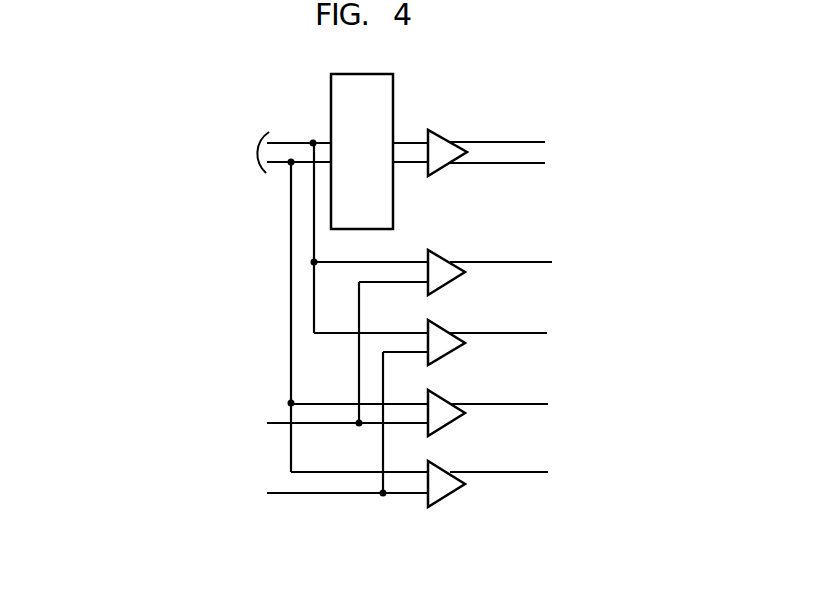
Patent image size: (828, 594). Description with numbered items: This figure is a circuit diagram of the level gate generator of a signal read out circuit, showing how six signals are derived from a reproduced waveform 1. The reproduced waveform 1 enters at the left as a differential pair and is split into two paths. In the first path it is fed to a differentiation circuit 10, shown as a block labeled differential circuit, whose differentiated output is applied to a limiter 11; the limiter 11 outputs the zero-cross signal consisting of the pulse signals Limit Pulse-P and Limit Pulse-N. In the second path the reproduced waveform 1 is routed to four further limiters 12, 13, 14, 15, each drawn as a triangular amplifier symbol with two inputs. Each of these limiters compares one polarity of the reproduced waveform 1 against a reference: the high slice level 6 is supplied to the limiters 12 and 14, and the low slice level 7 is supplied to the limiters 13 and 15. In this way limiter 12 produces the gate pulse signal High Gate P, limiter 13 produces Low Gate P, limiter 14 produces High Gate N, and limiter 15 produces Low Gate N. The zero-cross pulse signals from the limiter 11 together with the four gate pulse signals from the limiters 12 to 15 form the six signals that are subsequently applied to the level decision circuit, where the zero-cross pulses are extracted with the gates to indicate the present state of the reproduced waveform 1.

The reproduced waveform 1 is at (253, 142).
The high slice level 6 is at (270, 423).
The low slice level 7 is at (270, 493).
The differentiation circuit 10 is at (331, 84).
The limiter 11 is at (447, 134).
The limiter 12 is at (453, 258).
The limiter 13 is at (450, 330).
The limiter 14 is at (444, 398).
The limiter 15 is at (444, 468).